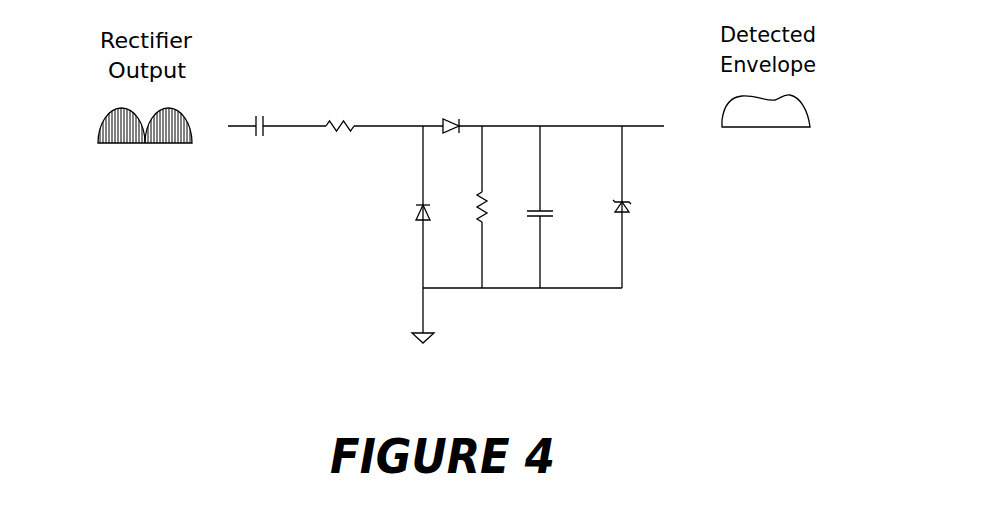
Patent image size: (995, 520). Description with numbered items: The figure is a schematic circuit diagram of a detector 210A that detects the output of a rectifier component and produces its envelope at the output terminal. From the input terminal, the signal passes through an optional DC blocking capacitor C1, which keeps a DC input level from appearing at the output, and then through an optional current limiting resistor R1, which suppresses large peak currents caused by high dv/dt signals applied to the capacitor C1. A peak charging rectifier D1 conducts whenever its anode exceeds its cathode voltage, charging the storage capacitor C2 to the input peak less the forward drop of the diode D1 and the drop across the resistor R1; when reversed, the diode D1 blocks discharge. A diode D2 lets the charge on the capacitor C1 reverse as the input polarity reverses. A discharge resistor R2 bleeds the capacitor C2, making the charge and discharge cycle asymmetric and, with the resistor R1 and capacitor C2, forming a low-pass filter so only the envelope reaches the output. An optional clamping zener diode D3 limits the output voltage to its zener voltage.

The detector 210A is at (545, 86).
The DC blocking capacitor C1 is at (258, 118).
The current limiting resistor R1 is at (340, 116).
The peak charging rectifier D1 is at (452, 117).
The diode D2 is at (412, 213).
The discharge resistor R2 is at (492, 207).
The storage capacitor C2 is at (550, 212).
The clamping zener diode D3 is at (632, 207).